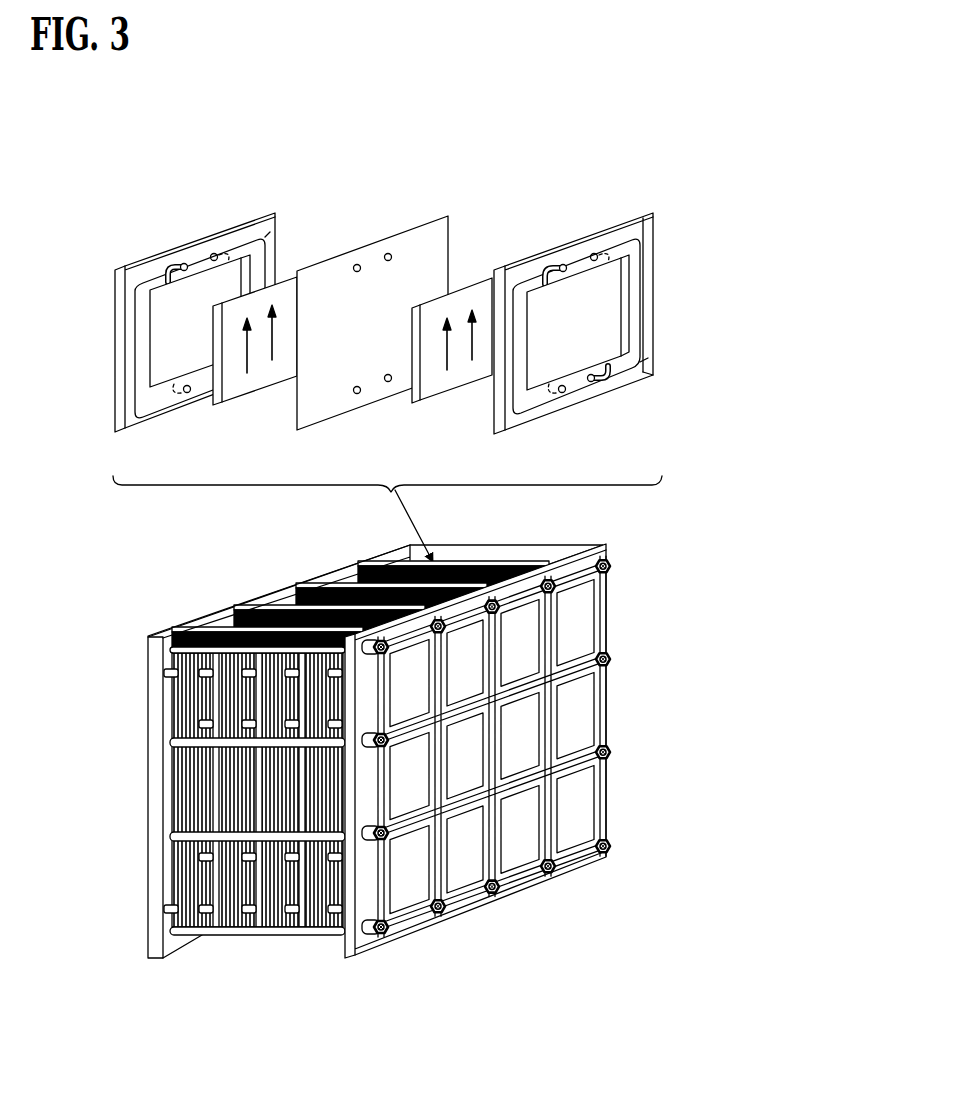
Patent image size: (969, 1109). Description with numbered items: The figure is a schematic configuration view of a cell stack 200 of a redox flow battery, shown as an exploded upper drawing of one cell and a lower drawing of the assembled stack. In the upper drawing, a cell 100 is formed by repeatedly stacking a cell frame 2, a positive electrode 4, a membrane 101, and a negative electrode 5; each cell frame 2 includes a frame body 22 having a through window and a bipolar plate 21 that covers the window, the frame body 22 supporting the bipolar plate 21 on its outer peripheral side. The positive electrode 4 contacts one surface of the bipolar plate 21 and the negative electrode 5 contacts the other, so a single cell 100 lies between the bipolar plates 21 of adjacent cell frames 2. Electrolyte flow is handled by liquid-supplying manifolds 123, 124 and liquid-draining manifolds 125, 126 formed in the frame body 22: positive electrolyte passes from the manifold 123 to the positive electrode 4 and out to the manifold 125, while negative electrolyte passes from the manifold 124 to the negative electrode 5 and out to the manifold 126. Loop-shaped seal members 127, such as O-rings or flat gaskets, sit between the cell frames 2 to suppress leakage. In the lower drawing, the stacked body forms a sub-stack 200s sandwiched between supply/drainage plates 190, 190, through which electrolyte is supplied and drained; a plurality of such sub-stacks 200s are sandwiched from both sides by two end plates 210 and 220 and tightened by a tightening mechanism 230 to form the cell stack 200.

The cell 100 is at (345, 157).
The membrane 101 is at (400, 213).
The cell frame 2 is at (44, 360).
The bipolar plate 21 is at (171, 352).
The frame body 22 is at (118, 334).
The positive electrode 4 is at (270, 381).
The negative electrode 5 is at (437, 390).
The liquid-supplying manifold 123 is at (633, 380).
The liquid-supplying manifold 124 is at (186, 393).
The liquid-draining manifold 125 is at (177, 252).
The liquid-draining manifold 126 is at (215, 253).
The seal member 127 is at (277, 238).
The cell stack 200 is at (620, 717).
The sub-stack 200s is at (175, 935).
The end plate 210 is at (525, 813).
The end plate 220 is at (150, 665).
The tightening mechanism 230 is at (290, 608).
The supply/drainage plate 190 is at (172, 888).